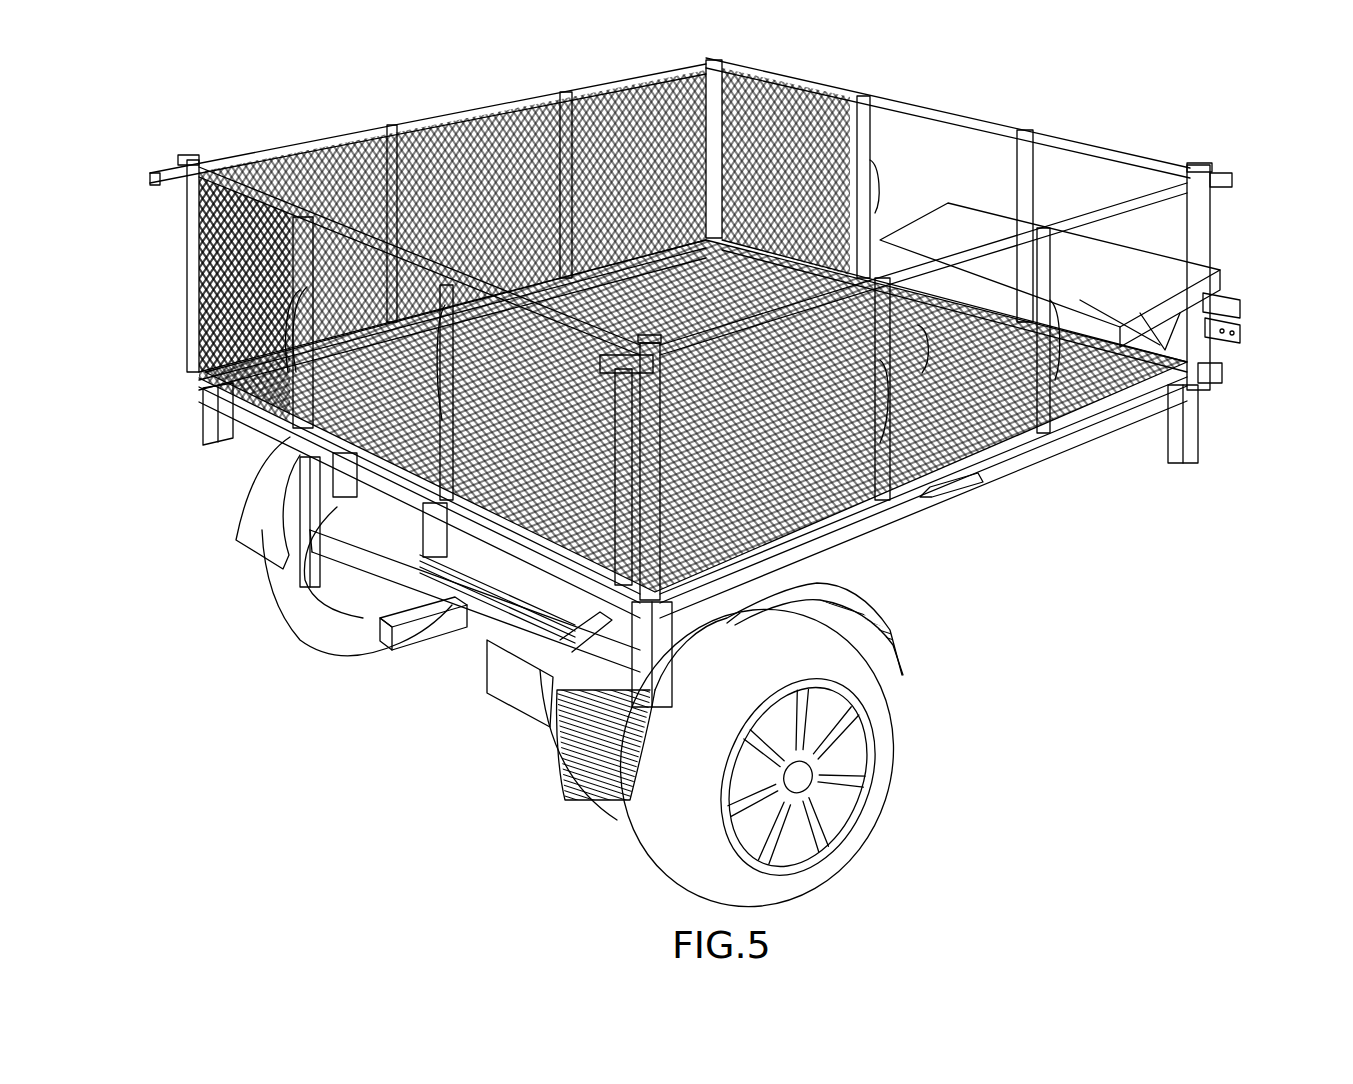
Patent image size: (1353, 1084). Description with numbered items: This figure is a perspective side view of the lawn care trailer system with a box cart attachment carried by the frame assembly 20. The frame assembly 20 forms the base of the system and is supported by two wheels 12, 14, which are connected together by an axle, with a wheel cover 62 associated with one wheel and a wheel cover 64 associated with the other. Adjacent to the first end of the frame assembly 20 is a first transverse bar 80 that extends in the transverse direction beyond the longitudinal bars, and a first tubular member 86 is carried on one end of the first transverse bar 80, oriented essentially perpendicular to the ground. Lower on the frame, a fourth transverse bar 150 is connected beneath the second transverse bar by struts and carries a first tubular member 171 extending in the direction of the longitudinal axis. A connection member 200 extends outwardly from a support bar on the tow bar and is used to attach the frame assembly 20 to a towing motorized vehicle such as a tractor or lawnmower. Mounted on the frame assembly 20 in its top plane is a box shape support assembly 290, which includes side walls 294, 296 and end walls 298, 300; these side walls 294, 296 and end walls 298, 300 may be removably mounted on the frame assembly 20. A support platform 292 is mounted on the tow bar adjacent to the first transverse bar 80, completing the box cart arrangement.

The wheel 12 is at (222, 440).
The wheel 14 is at (857, 813).
The frame assembly 20 is at (975, 546).
The wheel cover 62 is at (240, 532).
The wheel cover 64 is at (565, 778).
The first transverse bar 80 is at (1157, 417).
The first tubular member 86 is at (1180, 462).
The fourth transverse bar 150 is at (455, 690).
The first tubular member 171 is at (393, 627).
The connection member 200 is at (1235, 320).
The box shape support assembly 290 is at (1100, 140).
The support platform 292 is at (1220, 275).
The side wall 294 is at (503, 150).
The side wall 296 is at (1017, 446).
The end wall 298 is at (773, 143).
The end wall 300 is at (222, 288).